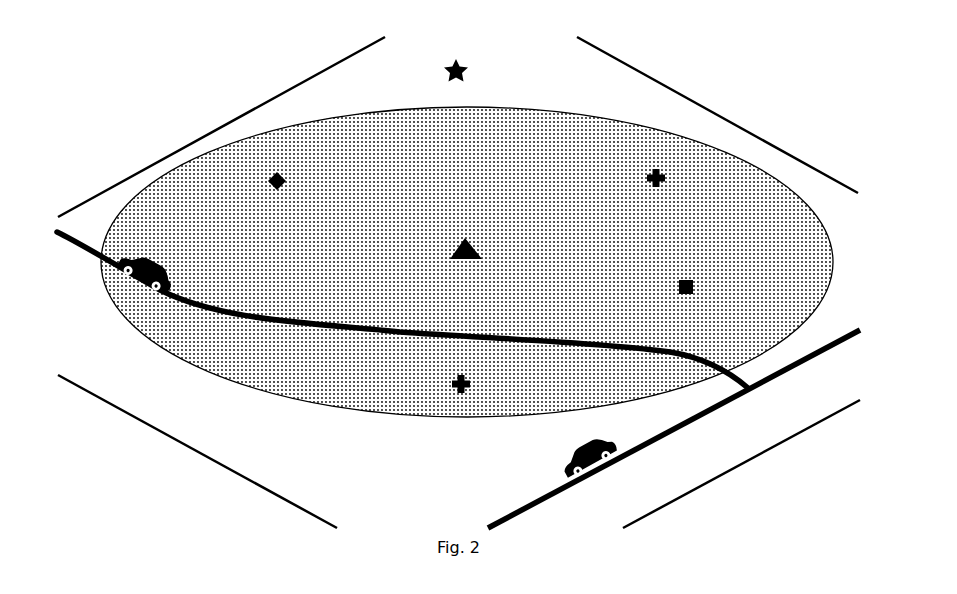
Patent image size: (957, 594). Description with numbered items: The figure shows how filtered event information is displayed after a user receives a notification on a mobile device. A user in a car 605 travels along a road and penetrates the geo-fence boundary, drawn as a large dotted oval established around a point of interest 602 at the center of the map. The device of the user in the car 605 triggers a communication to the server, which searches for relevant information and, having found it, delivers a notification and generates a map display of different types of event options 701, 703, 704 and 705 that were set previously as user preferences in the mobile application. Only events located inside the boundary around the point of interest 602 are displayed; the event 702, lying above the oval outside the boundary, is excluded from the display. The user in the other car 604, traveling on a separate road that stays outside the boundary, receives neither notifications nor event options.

The point of interest 602 is at (464, 259).
The car 604 is at (596, 464).
The car 605 is at (146, 280).
The event option 701 is at (296, 182).
The event 702 is at (474, 70).
The event option 703 is at (674, 180).
The event option 704 is at (706, 289).
The event option 705 is at (478, 385).